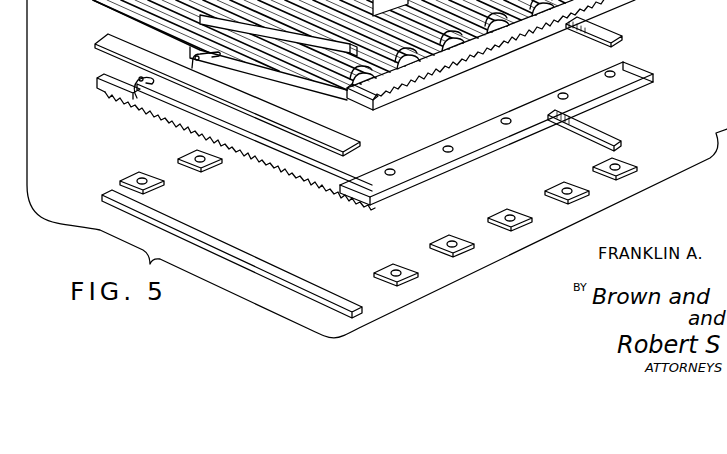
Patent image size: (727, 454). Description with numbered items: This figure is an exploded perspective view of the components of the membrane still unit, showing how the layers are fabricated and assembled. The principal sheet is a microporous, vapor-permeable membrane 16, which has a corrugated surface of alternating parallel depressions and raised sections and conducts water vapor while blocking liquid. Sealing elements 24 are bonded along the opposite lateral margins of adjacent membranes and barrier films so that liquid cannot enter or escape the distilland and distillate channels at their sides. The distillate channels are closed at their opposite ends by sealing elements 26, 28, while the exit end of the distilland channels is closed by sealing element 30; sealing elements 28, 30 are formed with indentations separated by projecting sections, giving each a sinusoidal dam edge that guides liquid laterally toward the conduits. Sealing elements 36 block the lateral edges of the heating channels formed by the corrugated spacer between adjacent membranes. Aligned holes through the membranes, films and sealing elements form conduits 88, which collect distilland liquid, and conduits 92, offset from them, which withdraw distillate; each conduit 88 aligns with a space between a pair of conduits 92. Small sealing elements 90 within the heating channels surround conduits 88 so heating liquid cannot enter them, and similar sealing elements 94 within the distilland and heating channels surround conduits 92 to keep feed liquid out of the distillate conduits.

The microporous vapor permeable membrane 16 is at (272, 170).
The sealing element 24 is at (107, 38).
The sealing element 26 is at (425, 172).
The sealing element 28 is at (118, 82).
The sealing element 30 is at (518, 47).
The sealing element 36 is at (252, 257).
The conduit 88 is at (445, 148).
The sealing element 90 is at (446, 258).
The conduit 92 is at (187, 58).
The sealing element 94 is at (182, 172).